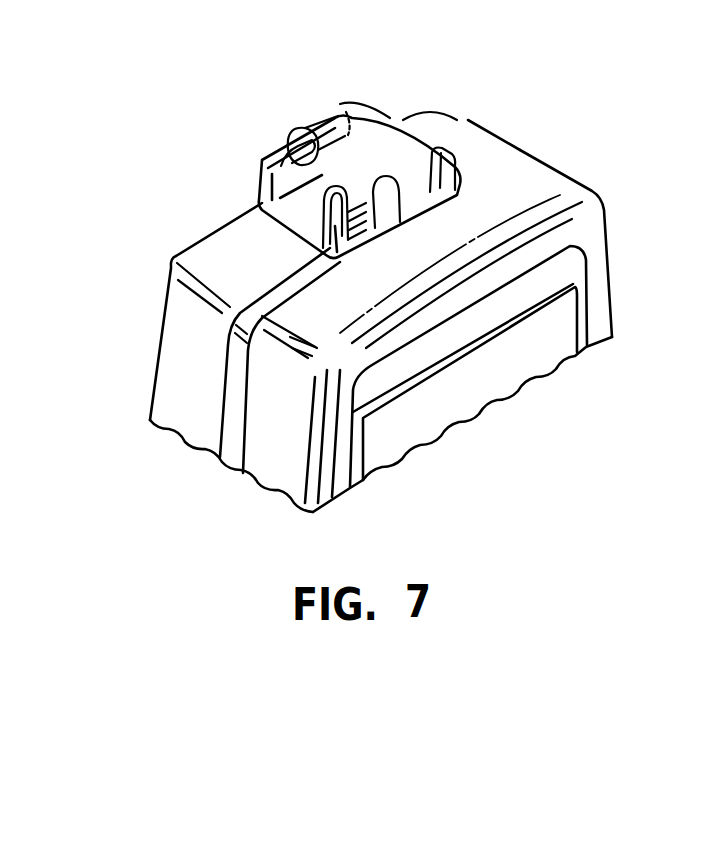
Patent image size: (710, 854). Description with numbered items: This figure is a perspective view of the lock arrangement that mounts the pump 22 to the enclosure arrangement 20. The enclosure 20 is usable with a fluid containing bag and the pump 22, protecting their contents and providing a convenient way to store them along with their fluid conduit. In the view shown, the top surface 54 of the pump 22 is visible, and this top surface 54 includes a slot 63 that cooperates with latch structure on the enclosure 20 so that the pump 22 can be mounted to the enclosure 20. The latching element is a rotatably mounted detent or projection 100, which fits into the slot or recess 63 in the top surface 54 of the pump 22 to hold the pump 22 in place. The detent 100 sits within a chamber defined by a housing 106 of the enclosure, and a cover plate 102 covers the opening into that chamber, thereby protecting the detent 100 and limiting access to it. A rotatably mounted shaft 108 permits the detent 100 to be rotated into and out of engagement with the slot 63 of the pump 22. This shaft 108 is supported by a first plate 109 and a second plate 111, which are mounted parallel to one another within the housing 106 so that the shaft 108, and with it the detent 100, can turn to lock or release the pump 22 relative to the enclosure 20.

The enclosure arrangement 20 is at (175, 254).
The pump 22 is at (612, 275).
The top surface 54 is at (560, 172).
The slot 63 is at (450, 186).
The detent 100 is at (398, 215).
The cover plate 102 is at (467, 141).
The housing 106 is at (362, 108).
The shaft 108 is at (345, 108).
The first plate 109 is at (418, 110).
The second plate 111 is at (280, 158).